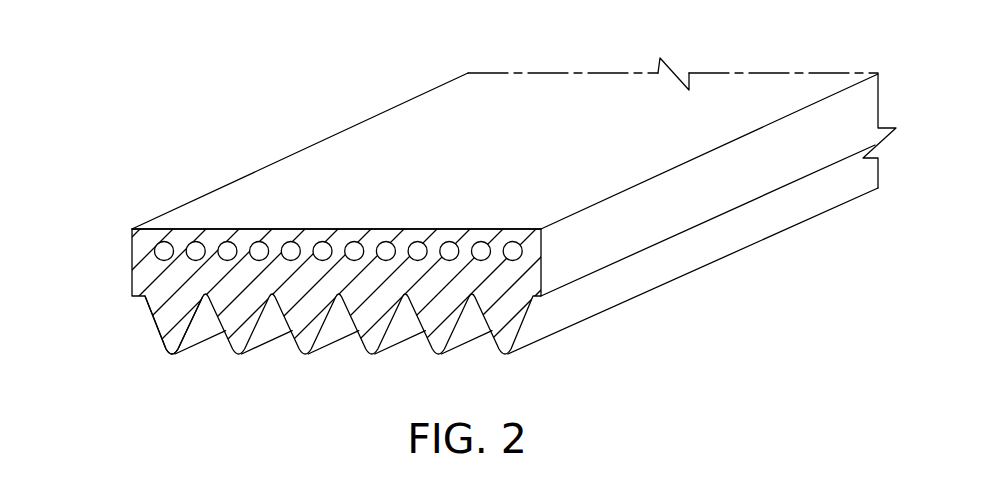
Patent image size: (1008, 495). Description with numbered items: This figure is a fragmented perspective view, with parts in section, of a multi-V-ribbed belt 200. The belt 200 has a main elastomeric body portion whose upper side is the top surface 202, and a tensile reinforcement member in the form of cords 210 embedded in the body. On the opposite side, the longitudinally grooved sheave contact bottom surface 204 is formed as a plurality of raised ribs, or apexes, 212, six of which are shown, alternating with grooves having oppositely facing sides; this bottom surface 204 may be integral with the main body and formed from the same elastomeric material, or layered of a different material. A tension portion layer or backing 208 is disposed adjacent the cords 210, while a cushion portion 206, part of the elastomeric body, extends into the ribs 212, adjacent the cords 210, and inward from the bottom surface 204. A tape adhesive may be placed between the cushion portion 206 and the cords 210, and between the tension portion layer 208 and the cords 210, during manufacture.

The multi-V-ribbed belt 200 is at (452, 205).
The top surface 202 is at (586, 104).
The sheave contact bottom surface 204 is at (665, 294).
The cushion portion 206 is at (132, 292).
The tension portion layer 208 is at (132, 235).
The cords 210 is at (292, 229).
The ribs 212 is at (168, 357).